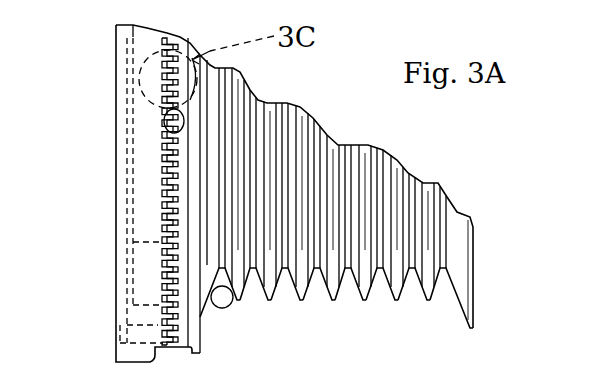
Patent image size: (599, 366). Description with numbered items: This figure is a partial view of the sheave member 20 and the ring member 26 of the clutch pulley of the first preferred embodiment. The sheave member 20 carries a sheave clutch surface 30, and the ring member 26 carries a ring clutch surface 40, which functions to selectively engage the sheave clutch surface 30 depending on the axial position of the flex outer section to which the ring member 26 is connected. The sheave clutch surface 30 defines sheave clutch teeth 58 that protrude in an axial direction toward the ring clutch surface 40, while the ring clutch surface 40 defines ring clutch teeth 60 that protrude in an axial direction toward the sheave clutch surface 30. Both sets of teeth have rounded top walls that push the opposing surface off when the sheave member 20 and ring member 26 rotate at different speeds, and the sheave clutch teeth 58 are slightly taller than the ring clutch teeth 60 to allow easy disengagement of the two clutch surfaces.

The sheave member 20 is at (373, 170).
The ring member 26 is at (153, 188).
The sheave clutch surface 30 is at (166, 150).
The ring clutch surface 40 is at (166, 135).
The sheave clutch teeth 58 is at (162, 222).
The ring clutch teeth 60 is at (163, 283).